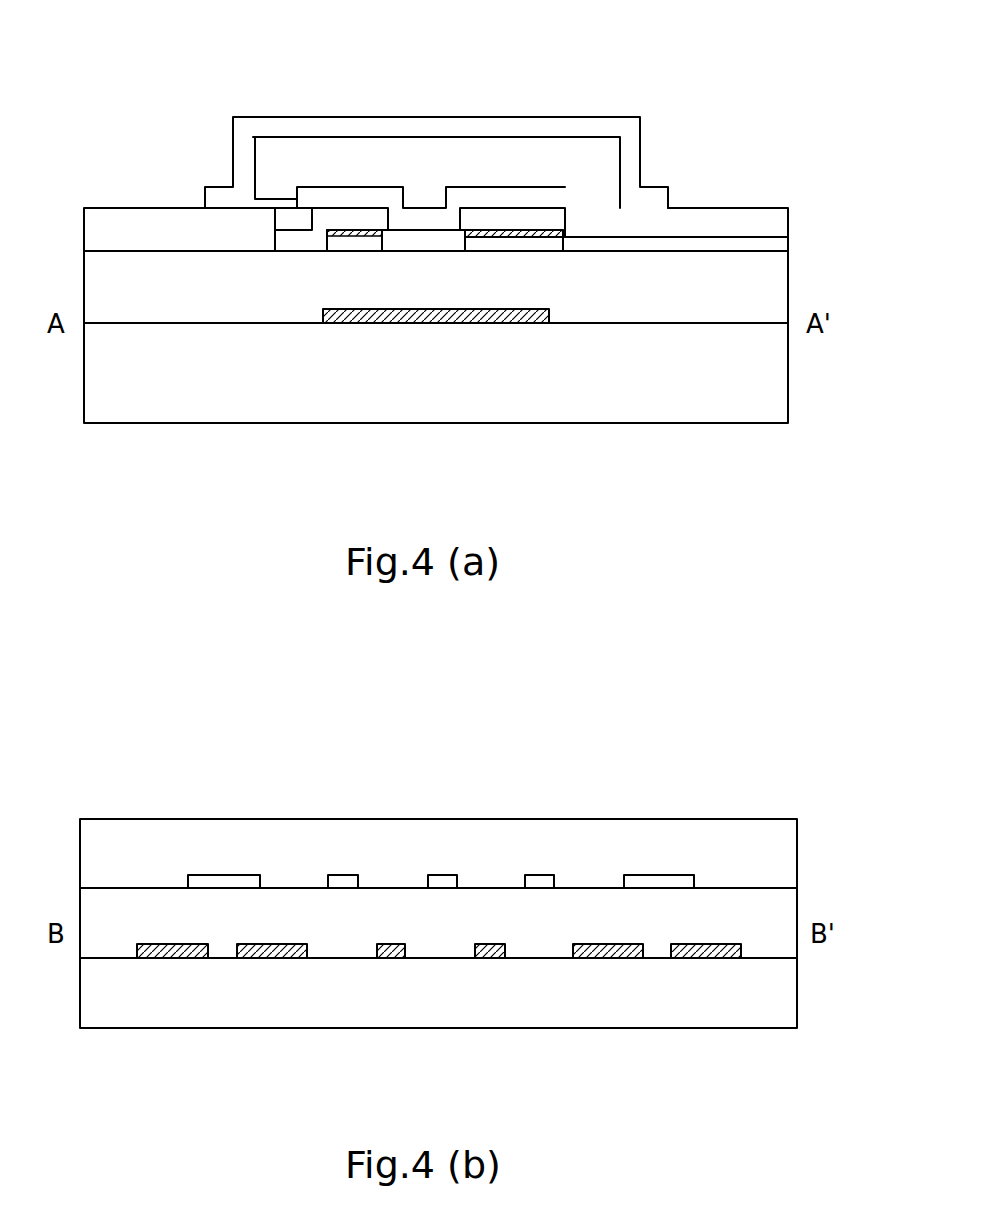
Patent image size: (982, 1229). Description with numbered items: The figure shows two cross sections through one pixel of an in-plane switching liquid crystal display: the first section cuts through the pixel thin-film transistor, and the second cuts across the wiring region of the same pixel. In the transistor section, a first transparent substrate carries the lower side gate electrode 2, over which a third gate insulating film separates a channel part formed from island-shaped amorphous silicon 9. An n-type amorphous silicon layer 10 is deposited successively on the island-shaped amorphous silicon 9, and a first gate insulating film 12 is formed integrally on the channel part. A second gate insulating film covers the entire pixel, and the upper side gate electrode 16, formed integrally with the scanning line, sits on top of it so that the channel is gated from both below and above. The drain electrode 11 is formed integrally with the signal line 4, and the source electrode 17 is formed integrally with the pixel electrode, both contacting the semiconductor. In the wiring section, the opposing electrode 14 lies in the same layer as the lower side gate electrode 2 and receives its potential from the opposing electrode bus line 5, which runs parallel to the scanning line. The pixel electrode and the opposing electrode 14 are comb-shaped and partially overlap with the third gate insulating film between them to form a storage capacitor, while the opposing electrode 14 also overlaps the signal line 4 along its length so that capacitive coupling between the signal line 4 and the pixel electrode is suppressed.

The lower side gate electrode 2 is at (403, 315).
The signal line 4 is at (233, 875).
The opposing electrode bus line 5 is at (262, 960).
The island-shaped amorphous silicon 9 is at (315, 197).
The n-type amorphous silicon layer 10 is at (323, 228).
The drain electrode 11 is at (340, 245).
The first gate insulating film 12 is at (422, 220).
The opposing electrode 14 is at (390, 958).
The upper side gate electrode 16 is at (493, 122).
The source electrode 17 is at (525, 250).